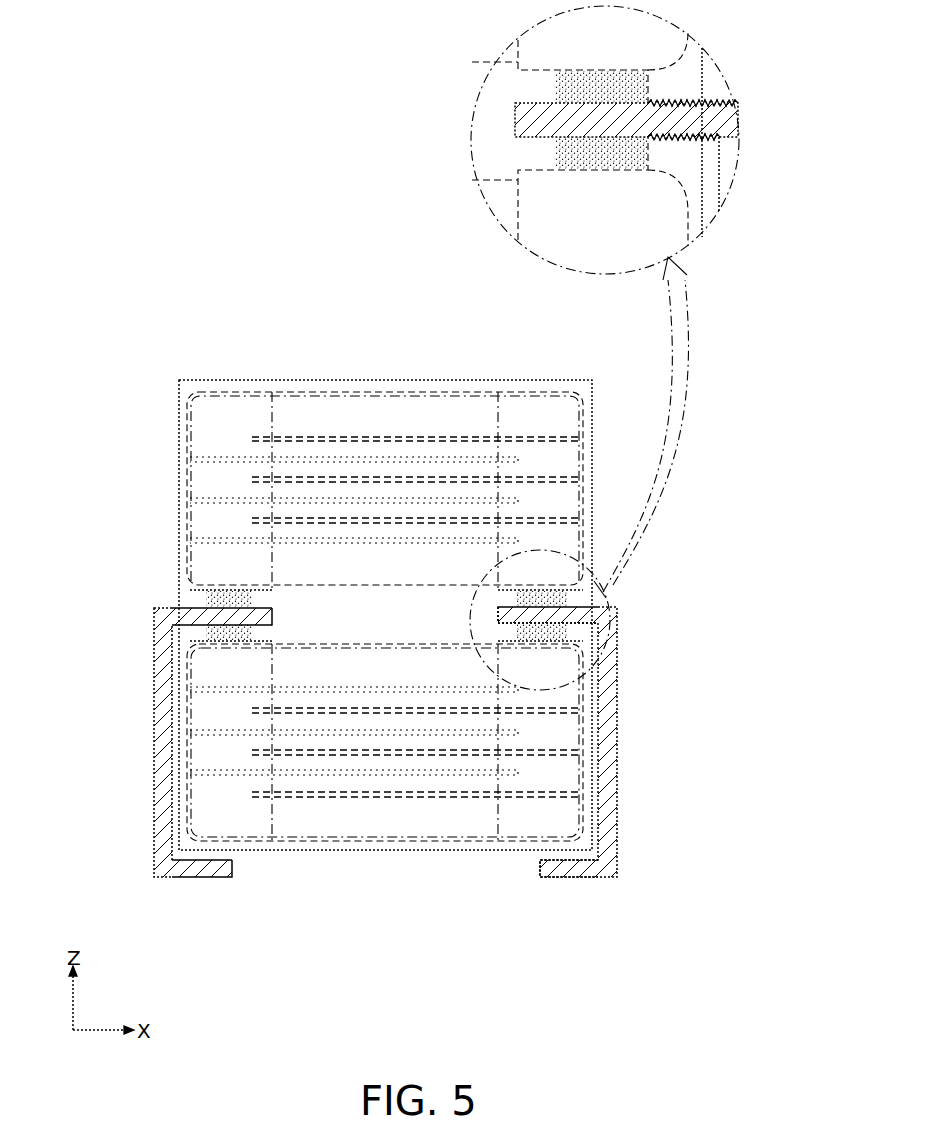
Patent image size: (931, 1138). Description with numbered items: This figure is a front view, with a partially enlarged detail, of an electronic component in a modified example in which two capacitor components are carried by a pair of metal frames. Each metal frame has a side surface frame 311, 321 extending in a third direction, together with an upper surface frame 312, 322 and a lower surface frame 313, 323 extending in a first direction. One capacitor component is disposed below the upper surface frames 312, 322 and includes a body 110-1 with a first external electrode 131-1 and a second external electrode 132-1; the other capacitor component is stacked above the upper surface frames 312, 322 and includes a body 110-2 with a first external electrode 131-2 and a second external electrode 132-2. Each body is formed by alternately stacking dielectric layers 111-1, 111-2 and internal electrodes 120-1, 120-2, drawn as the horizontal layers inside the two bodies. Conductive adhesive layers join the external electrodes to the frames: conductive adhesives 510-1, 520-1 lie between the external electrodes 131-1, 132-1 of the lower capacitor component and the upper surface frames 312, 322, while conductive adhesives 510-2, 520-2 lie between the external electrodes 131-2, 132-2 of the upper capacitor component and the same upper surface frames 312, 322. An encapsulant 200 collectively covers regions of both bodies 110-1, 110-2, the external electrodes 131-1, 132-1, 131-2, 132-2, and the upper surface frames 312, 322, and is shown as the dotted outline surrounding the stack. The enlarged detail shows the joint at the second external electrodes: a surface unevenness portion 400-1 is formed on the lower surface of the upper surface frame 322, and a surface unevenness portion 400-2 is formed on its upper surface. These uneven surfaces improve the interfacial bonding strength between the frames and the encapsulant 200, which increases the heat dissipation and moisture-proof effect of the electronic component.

The body 110-1 is at (447, 822).
The body 110-2 is at (336, 405).
The dielectric layer 111-1 is at (447, 702).
The dielectric layer 111-2 is at (268, 465).
The internal electrode 120-1 is at (557, 712).
The internal electrode 120-2 is at (213, 459).
The first external electrode 131-1 is at (215, 806).
The first external electrode 131-2 is at (213, 519).
The second external electrode 132-1 is at (555, 820).
The second external electrode 132-2 is at (532, 403).
The encapsulant 200 is at (333, 852).
The side surface frame 311 is at (155, 705).
The upper surface frame 312 is at (195, 615).
The lower surface frame 313 is at (202, 875).
The side surface frame 321 is at (605, 768).
The upper surface frame 322 is at (715, 118).
The lower surface frame 323 is at (580, 877).
The surface unevenness portion 400-1 is at (670, 137).
The surface unevenness portion 400-2 is at (670, 103).
The conductive adhesive 510-1 is at (210, 633).
The conductive adhesive 510-2 is at (233, 592).
The conductive adhesive 520-1 is at (557, 150).
The conductive adhesive 520-2 is at (557, 85).